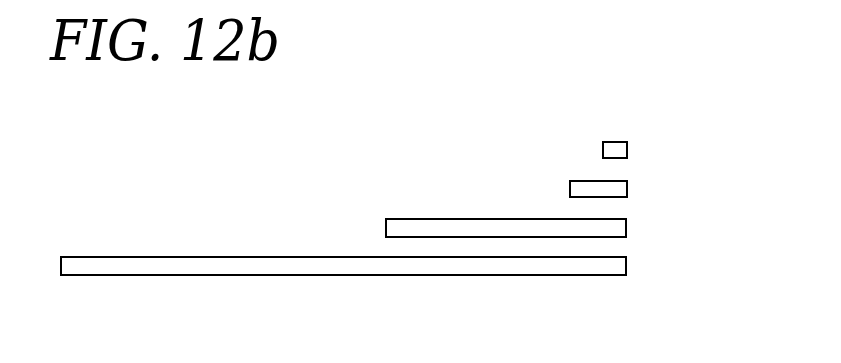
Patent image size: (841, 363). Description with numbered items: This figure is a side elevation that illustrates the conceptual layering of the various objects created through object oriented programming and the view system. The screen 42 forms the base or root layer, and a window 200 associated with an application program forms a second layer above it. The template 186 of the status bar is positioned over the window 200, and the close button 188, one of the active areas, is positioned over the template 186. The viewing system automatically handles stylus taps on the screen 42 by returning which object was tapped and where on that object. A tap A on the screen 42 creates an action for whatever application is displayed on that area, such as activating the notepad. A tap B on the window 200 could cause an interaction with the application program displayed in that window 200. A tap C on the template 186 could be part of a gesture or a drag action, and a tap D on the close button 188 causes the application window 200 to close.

The screen 42 is at (112, 275).
The window 200 is at (648, 222).
The template 186 is at (646, 182).
The close button 188 is at (646, 144).
The tap on the screen A is at (217, 238).
The tap on the window B is at (415, 190).
The tap on the template C is at (578, 152).
The tap on the close button D is at (616, 113).